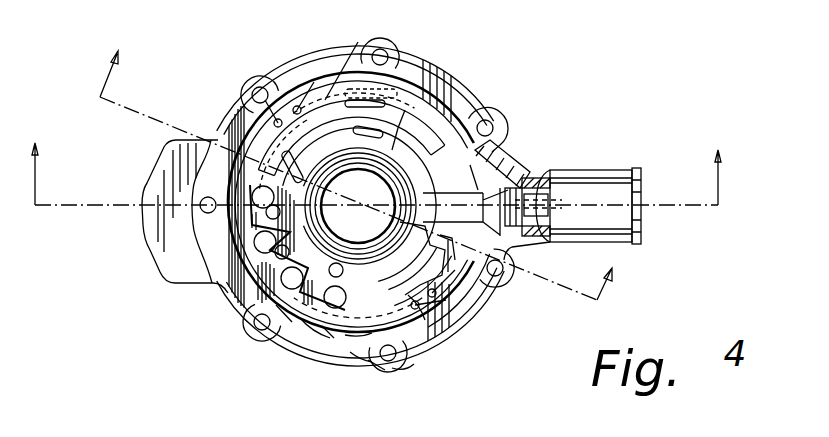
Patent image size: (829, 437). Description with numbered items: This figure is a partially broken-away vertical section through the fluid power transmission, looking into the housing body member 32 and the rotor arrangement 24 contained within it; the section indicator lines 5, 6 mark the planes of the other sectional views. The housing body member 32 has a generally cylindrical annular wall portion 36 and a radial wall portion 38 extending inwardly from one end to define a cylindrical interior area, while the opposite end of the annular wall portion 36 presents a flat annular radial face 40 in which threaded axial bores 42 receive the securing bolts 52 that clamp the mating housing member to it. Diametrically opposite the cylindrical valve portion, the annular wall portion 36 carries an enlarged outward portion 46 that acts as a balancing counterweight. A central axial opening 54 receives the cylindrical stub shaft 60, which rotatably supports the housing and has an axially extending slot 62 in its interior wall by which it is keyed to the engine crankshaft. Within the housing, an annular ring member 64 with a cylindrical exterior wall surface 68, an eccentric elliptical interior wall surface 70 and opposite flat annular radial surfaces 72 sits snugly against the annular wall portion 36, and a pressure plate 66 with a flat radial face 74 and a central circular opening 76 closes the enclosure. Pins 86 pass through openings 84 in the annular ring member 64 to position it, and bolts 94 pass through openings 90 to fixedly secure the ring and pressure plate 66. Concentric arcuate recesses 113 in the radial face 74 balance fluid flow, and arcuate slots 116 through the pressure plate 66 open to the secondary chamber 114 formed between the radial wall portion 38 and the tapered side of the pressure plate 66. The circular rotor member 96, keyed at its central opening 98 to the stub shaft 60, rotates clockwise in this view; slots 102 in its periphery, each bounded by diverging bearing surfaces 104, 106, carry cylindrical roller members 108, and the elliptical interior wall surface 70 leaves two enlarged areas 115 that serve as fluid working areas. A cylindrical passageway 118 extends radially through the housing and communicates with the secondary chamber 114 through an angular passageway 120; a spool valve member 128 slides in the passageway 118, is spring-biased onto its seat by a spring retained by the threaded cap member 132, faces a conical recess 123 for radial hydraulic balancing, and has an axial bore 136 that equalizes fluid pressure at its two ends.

The section line 5- 5 is at (380, 161).
The section line 6- 6 is at (362, 171).
The rotor arrangement 24 is at (410, 365).
The housing body member 32 is at (472, 92).
The annular wall portion 36 is at (412, 62).
The radial wall portion 38 is at (438, 158).
The annular radial face 40 is at (366, 69).
The threaded axial bores 42 is at (384, 42).
The enlarged outward portion 46 is at (174, 270).
The securing bolts 52 is at (390, 50).
The central axial opening 54 is at (432, 181).
The stub shaft 60 is at (394, 206).
The axially-extending slot 62 is at (322, 190).
The annular ring member 64 is at (362, 364).
The pressure plate 66 is at (358, 46).
The cylindrical exterior wall surface 68 is at (380, 370).
The eccentric elliptical interior wall surface 70 is at (372, 300).
The flat annular radial surfaces 72 is at (384, 323).
The flat radial face 74 is at (332, 125).
The central circular opening 76 is at (434, 246).
The openings 84 is at (305, 62).
The pins 86 is at (300, 106).
The openings 90 is at (245, 110).
The bolts 94 is at (283, 72).
The rotor member 96 is at (316, 268).
The central opening 98 is at (344, 282).
The slots 102 is at (286, 236).
The bearing surface 104 is at (356, 338).
The bearing surface 106 is at (312, 336).
The cylindrical roller member 108 is at (292, 322).
The concentric arcuate recesses 113 is at (390, 140).
The secondary chamber 114 is at (497, 112).
The enlarged areas 115 is at (332, 339).
The arcuate slots 116 is at (291, 153).
The cylindrical passageway 118 is at (558, 176).
The passageway 120 is at (521, 168).
The conical recess 123 is at (553, 172).
The spool valve member 128 is at (546, 245).
The cap member 132 is at (643, 180).
The bore 136 is at (563, 200).